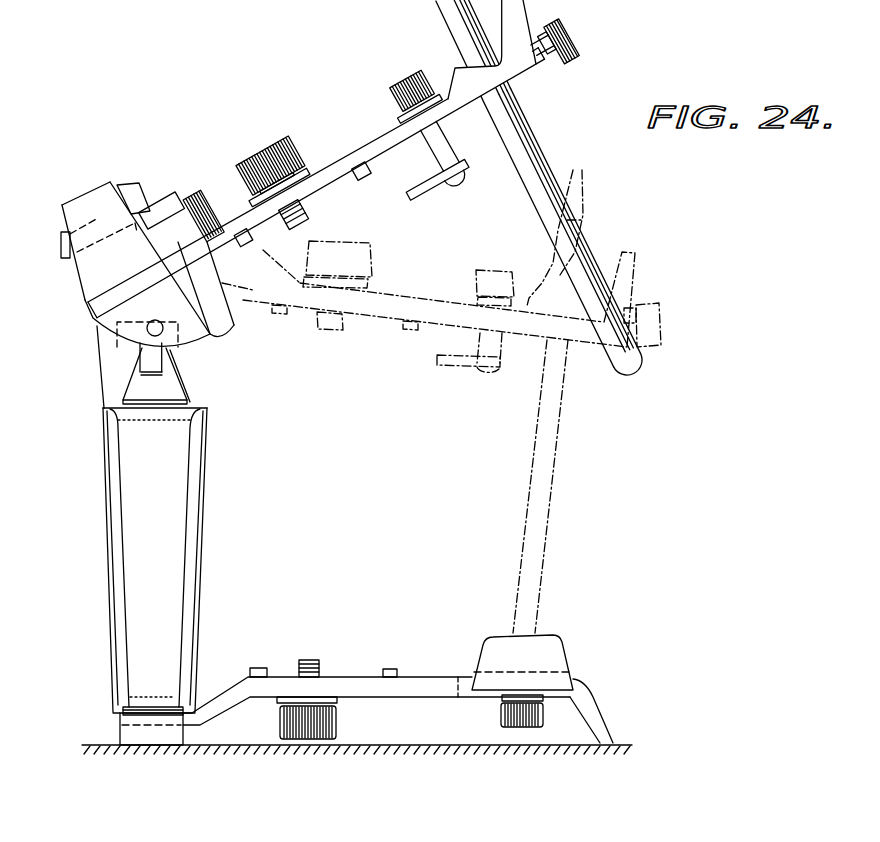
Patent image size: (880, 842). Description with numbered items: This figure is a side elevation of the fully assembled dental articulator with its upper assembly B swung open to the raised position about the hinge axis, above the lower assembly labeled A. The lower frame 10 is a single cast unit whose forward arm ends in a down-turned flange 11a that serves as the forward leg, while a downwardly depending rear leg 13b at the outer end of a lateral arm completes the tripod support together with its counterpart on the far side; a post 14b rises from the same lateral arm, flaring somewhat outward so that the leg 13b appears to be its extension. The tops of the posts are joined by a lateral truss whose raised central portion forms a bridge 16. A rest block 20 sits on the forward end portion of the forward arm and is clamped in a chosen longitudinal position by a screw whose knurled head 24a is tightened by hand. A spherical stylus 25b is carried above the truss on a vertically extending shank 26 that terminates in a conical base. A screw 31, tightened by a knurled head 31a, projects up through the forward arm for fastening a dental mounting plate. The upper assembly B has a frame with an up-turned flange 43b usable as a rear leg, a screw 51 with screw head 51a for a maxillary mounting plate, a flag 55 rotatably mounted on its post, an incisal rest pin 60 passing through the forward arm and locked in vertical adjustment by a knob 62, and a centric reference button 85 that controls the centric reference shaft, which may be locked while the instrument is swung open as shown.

The lower frame 10 is at (220, 573).
The down-turned flange 11a is at (598, 704).
The rear leg 13b is at (128, 732).
The post 14b is at (180, 500).
The bridge 16 is at (104, 363).
The rest block 20 is at (560, 640).
The knurled head 24a is at (534, 718).
The spherical stylus 25b is at (117, 333).
The shank 26 is at (127, 392).
The screw 31 is at (303, 659).
The knurled head 31a is at (323, 729).
The up-turned flange 43b is at (64, 202).
The screw 51 is at (309, 218).
The screw head 51a is at (250, 160).
The flag 55 is at (412, 191).
The incisal rest pin 60 is at (519, 119).
The knob 62 is at (572, 24).
The centric reference button 85 is at (62, 243).
The stand assembly A is at (84, 607).
The upper assembly B is at (365, 53).